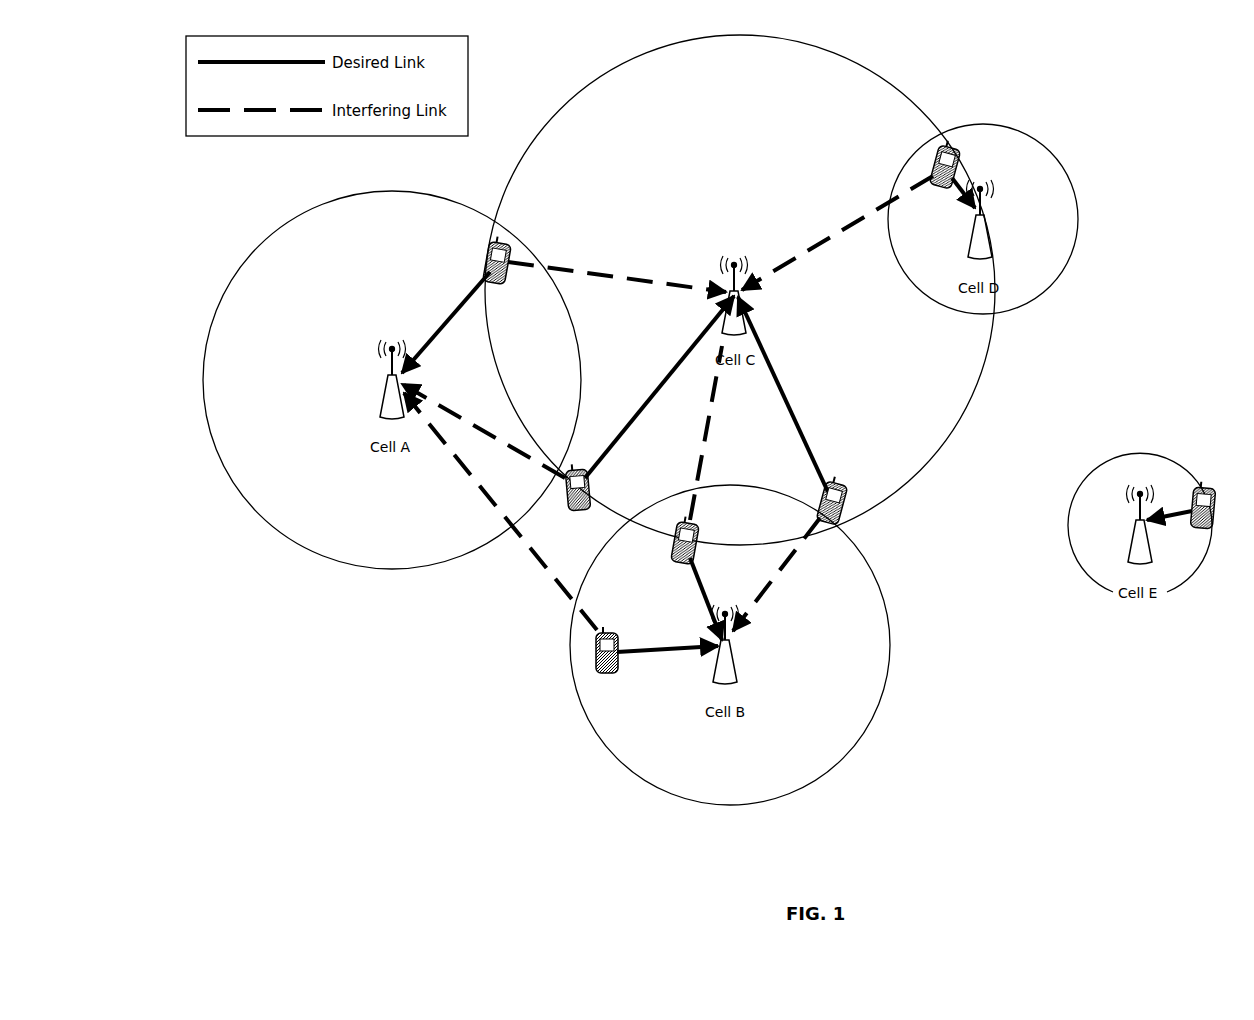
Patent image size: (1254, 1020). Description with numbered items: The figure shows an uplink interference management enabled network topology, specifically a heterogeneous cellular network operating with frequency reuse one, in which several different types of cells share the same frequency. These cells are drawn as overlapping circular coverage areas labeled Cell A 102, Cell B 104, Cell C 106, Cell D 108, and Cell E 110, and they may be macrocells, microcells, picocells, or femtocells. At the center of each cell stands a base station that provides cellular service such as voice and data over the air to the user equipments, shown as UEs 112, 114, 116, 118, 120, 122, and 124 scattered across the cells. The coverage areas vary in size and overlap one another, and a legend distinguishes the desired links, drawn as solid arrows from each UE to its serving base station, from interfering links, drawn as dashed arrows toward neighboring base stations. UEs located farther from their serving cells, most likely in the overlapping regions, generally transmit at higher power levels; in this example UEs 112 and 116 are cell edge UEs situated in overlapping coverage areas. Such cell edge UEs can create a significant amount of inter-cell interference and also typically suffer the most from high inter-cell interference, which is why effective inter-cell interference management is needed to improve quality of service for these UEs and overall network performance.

The Cell A 102 is at (378, 396).
The Cell B 104 is at (740, 648).
The Cell C 106 is at (742, 296).
The Cell D 108 is at (988, 222).
The Cell E 110 is at (1135, 520).
The UE 112 is at (488, 262).
The UE 114 is at (576, 512).
The UE 116 is at (680, 560).
The UE 118 is at (598, 678).
The UE 120 is at (845, 488).
The UE 122 is at (950, 148).
The UE 124 is at (1201, 488).